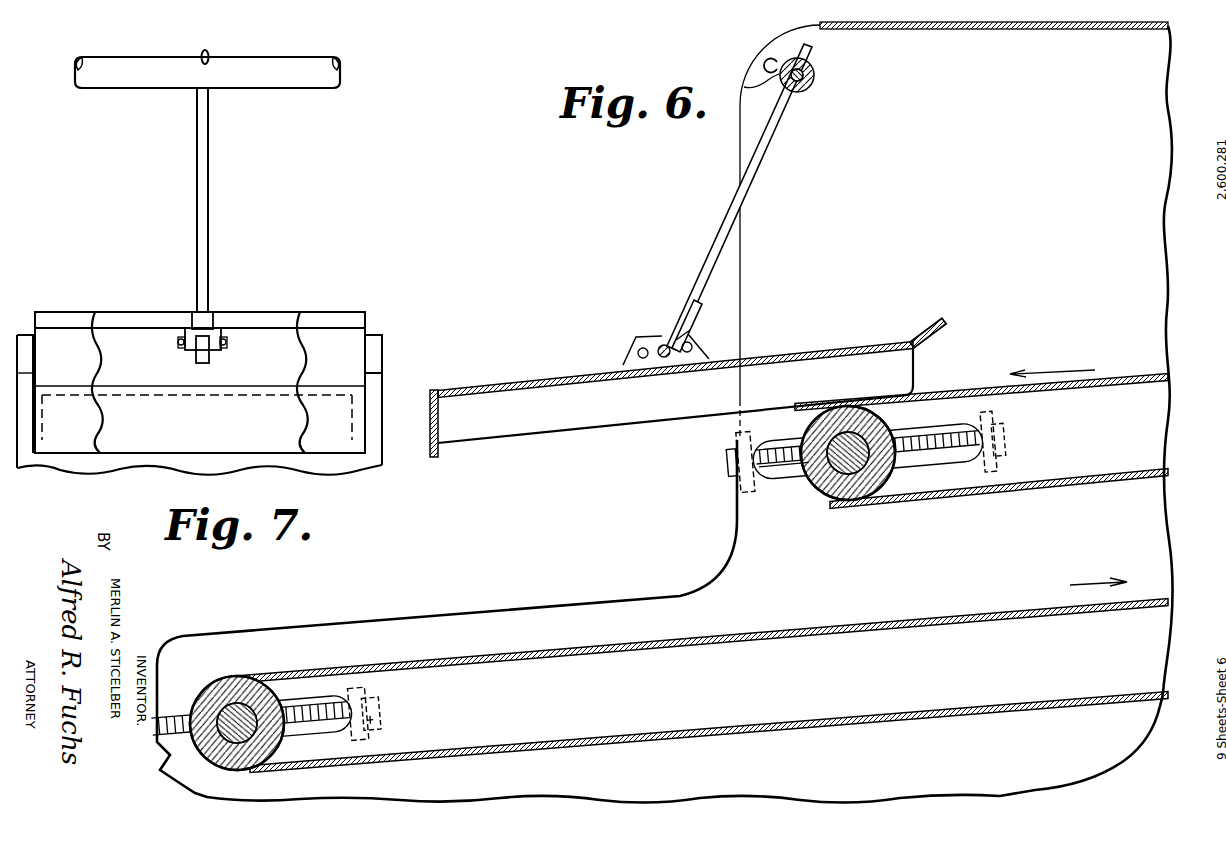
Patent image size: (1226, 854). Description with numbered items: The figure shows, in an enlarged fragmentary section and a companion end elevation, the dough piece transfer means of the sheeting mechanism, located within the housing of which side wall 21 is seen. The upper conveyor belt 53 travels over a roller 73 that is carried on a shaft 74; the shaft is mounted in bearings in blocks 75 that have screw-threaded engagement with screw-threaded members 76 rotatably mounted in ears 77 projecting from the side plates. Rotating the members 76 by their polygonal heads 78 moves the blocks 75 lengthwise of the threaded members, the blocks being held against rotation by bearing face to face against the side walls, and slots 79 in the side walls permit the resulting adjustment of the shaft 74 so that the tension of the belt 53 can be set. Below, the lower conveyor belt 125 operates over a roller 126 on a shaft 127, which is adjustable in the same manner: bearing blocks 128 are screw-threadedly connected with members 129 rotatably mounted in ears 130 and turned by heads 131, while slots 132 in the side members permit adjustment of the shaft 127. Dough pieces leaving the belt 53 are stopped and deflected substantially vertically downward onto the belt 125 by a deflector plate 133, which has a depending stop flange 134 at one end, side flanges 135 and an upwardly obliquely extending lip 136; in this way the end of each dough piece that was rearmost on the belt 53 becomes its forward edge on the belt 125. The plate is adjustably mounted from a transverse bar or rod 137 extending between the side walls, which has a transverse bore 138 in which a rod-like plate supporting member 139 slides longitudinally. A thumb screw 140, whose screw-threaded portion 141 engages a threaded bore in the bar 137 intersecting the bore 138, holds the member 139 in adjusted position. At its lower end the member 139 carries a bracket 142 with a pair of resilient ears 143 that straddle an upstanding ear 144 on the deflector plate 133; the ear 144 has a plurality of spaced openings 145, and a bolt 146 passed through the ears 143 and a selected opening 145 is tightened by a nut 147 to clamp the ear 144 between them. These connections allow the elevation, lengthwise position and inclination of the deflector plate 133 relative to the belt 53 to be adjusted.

In FIG. 6, the side wall 21 is at (1150, 312).
In FIG. 7, the conveyor belt 53 is at (378, 416).
In FIG. 6, the conveyor belt 53 is at (1088, 380).
In FIG. 6, the roller 73 is at (850, 487).
In FIG. 6, the shaft 74 is at (849, 469).
In FIG. 6, the blocks 75 is at (864, 411).
In FIG. 6, the screw-threaded members 76 is at (871, 419).
In FIG. 6, the ears 77 is at (864, 445).
In FIG. 6, the polygonal heads 78 is at (875, 451).
In FIG. 6, the slots 79 is at (784, 495).
In FIG. 6, the conveyor belt 125 is at (984, 606).
In FIG. 6, the roller 126 is at (243, 710).
In FIG. 6, the shaft 127 is at (260, 755).
In FIG. 6, the bearing blocks 128 is at (249, 695).
In FIG. 6, the screw-threaded members 129 is at (304, 685).
In FIG. 6, the ears 130 is at (378, 690).
In FIG. 6, the heads 131 is at (405, 728).
In FIG. 6, the slots 132 is at (404, 708).
In FIG. 7, the deflector plate 133 is at (340, 325).
In FIG. 6, the deflector plate 133 is at (768, 360).
In FIG. 7, the depending flange 134 is at (240, 443).
In FIG. 6, the depending flange 134 is at (430, 440).
In FIG. 6, the side flanges 135 is at (589, 422).
In FIG. 7, the lip 136 is at (376, 372).
In FIG. 6, the lip 136 is at (944, 333).
In FIG. 7, the bar or rod 137 is at (292, 80).
In FIG. 6, the bar or rod 137 is at (814, 83).
In FIG. 6, the transverse bore 138 is at (804, 90).
In FIG. 7, the rod-like plate supporting member 139 is at (204, 196).
In FIG. 6, the rod-like plate supporting member 139 is at (735, 197).
In FIG. 7, the thumb screw 140 is at (210, 52).
In FIG. 6, the thumb screw 140 is at (764, 66).
In FIG. 6, the screw-threaded portion 141 is at (748, 83).
In FIG. 7, the bracket 142 is at (205, 318).
In FIG. 6, the bracket 142 is at (679, 318).
In FIG. 7, the ears 143 is at (186, 338).
In FIG. 6, the ears 143 is at (660, 342).
In FIG. 7, the upstanding ear 144 is at (203, 363).
In FIG. 6, the upstanding ear 144 is at (690, 333).
In FIG. 6, the openings 145 is at (638, 352).
In FIG. 7, the bolt 146 is at (227, 344).
In FIG. 6, the bolt 146 is at (658, 348).
In FIG. 7, the nut 147 is at (178, 348).